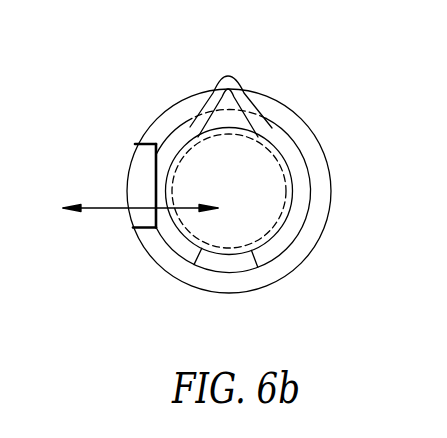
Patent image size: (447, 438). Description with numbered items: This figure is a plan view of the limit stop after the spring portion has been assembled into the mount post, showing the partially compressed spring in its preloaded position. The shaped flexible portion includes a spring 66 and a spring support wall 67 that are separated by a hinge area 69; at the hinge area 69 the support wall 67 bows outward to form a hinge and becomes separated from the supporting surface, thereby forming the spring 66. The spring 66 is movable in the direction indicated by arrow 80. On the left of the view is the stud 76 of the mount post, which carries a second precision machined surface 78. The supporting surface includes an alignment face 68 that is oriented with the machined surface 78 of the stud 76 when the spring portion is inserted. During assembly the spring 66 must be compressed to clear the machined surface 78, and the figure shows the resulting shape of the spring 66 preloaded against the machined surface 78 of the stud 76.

The spring 66 is at (190, 255).
The spring support wall 67 is at (303, 177).
The alignment face 68 is at (150, 229).
The hinge area 69 is at (241, 81).
The stud 76 is at (127, 181).
The machined surface 78 is at (150, 161).
The arrow 80 is at (186, 207).